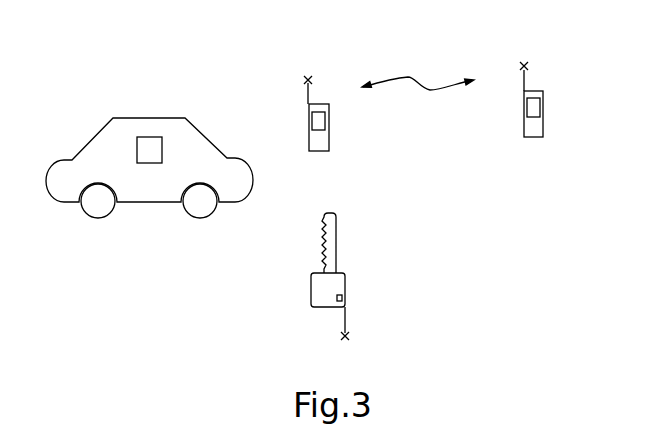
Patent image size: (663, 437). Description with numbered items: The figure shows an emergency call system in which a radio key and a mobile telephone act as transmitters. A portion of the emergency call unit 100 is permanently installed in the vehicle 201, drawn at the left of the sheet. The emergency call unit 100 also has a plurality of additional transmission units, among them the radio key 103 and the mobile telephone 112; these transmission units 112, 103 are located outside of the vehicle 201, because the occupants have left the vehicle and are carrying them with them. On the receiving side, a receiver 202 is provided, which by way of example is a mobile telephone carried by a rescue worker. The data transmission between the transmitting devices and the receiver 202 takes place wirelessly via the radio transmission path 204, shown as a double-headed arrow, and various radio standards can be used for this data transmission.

The emergency call unit 100 is at (145, 137).
The vehicle 201 is at (253, 177).
The mobile telephone 112 is at (329, 143).
The receiver 202 is at (543, 123).
The radio transmission path 204 is at (432, 88).
The radio key 103 is at (345, 285).